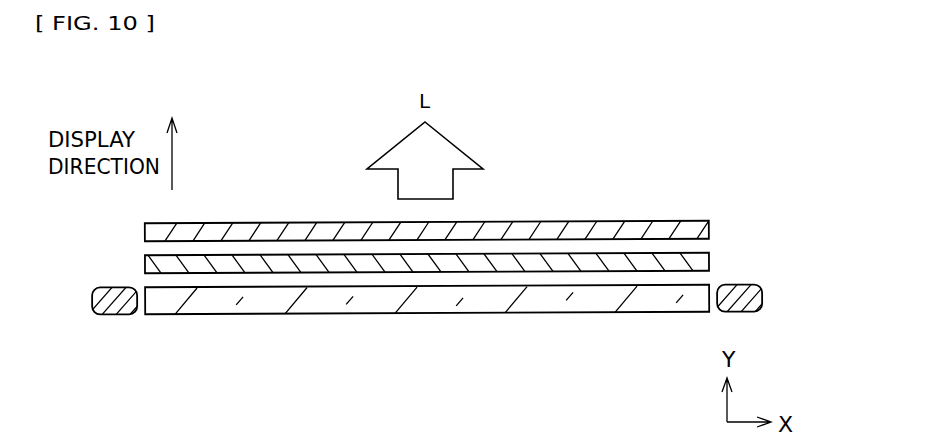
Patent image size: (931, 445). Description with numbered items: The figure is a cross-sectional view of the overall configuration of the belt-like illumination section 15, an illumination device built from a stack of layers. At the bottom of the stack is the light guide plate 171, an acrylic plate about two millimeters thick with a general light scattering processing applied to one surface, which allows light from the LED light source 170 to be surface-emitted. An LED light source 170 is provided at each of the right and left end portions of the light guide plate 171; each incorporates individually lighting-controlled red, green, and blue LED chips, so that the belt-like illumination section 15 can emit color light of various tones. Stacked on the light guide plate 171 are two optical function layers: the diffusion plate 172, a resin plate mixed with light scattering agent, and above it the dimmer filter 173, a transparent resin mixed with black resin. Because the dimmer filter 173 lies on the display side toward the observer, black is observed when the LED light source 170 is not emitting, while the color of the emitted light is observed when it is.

The belt-like illumination section 15 is at (716, 162).
The LED light source 170 is at (765, 298).
The light guide plate 171 is at (432, 305).
The diffusion plate 172 is at (712, 261).
The dimmer filter 173 is at (712, 229).